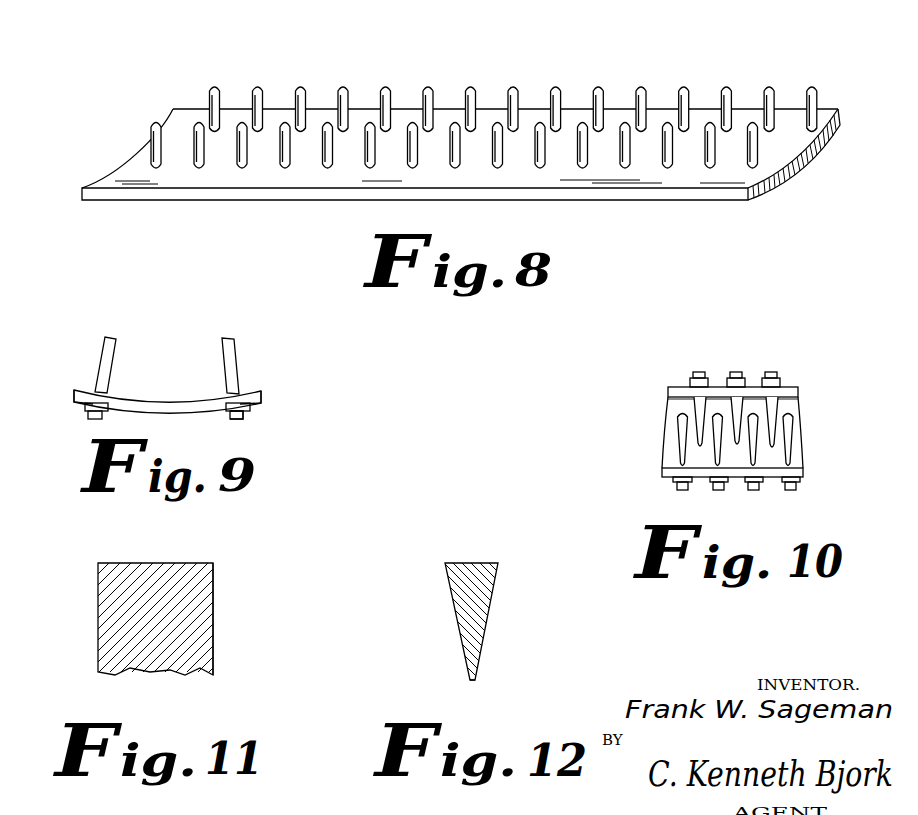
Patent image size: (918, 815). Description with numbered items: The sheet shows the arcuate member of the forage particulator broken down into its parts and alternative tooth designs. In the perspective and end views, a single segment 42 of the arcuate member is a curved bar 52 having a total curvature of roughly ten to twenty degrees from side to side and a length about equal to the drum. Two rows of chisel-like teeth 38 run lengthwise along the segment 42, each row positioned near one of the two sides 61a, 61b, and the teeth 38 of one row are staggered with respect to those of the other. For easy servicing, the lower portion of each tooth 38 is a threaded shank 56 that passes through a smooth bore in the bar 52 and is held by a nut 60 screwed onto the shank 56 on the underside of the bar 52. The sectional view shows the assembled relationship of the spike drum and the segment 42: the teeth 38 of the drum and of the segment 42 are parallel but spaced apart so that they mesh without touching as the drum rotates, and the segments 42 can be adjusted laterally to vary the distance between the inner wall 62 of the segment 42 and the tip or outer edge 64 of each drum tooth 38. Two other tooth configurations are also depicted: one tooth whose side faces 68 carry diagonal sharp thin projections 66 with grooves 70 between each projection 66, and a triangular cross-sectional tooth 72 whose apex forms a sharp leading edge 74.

In FIG. 8, the tooth 38 is at (342, 100).
In FIG. 9, the tooth 38 is at (223, 340).
In FIG. 10, the tooth 38 is at (700, 405).
In FIG. 8, the segment 42 is at (211, 208).
In FIG. 9, the segment 42 is at (163, 394).
In FIG. 10, the segment 42 is at (650, 476).
In FIG. 10, the bar 52 is at (798, 392).
In FIG. 9, the threaded shank 56 is at (246, 416).
In FIG. 10, the threaded shank 56 is at (770, 374).
In FIG. 9, the nut 60 is at (86, 409).
In FIG. 9, the side of segment 61a is at (263, 392).
In FIG. 9, the side of segment 61b is at (78, 393).
In FIG. 8, the inner wall 62 is at (782, 137).
In FIG. 10, the inner wall 62 is at (672, 463).
In FIG. 8, the tip or outer edge of tooth 64 is at (555, 87).
In FIG. 10, the tip or outer edge of tooth 64 is at (772, 442).
In FIG. 11, the projections 66 is at (107, 585).
In FIG. 11, the side faces 68 is at (215, 632).
In FIG. 11, the grooves 70 is at (202, 603).
In FIG. 12, the triangular cross-sectional tooth 72 is at (453, 605).
In FIG. 12, the sharp leading edge 74 is at (473, 680).